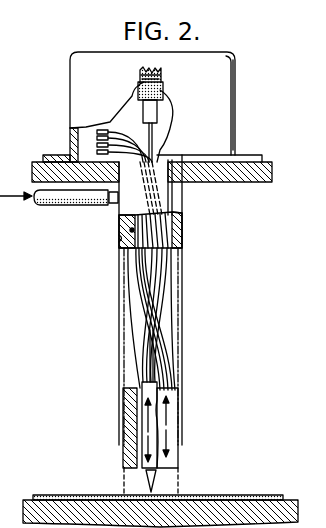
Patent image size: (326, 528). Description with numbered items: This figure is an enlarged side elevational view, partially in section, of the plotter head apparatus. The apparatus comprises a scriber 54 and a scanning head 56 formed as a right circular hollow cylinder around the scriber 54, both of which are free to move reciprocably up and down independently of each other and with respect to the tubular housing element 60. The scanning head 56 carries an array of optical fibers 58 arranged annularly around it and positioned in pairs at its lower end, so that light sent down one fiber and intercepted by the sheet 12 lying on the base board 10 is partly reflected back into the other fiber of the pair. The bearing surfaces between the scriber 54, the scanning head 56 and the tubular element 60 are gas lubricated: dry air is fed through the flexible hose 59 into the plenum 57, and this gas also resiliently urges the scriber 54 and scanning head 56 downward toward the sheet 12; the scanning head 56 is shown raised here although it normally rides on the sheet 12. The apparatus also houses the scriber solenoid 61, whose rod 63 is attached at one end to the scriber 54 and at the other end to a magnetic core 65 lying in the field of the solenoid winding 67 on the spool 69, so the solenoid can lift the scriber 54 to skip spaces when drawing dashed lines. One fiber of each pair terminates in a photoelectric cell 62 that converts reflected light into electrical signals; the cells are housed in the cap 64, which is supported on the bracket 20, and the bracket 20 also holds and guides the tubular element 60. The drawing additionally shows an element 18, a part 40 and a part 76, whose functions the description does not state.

The base board 10 is at (292, 500).
The sheet 12 is at (232, 495).
The cover wall 18 is at (236, 88).
The bracket 20 is at (270, 162).
The carriage 40 is at (7, 268).
The scriber 54 is at (158, 383).
The scanning head 56 is at (178, 457).
The plenum 57 is at (119, 239).
The optical fibers 58 is at (132, 278).
The flexible hose 59 is at (62, 206).
The tubular housing element 60 is at (185, 212).
The scriber solenoid 61 is at (163, 93).
The photoelectric cell 62 is at (110, 138).
The rod 63 is at (153, 137).
The cap 64 is at (75, 62).
The magnetic core 65 is at (157, 113).
The solenoid winding 67 is at (138, 85).
The spool 69 is at (123, 100).
The support 76 is at (8, 456).